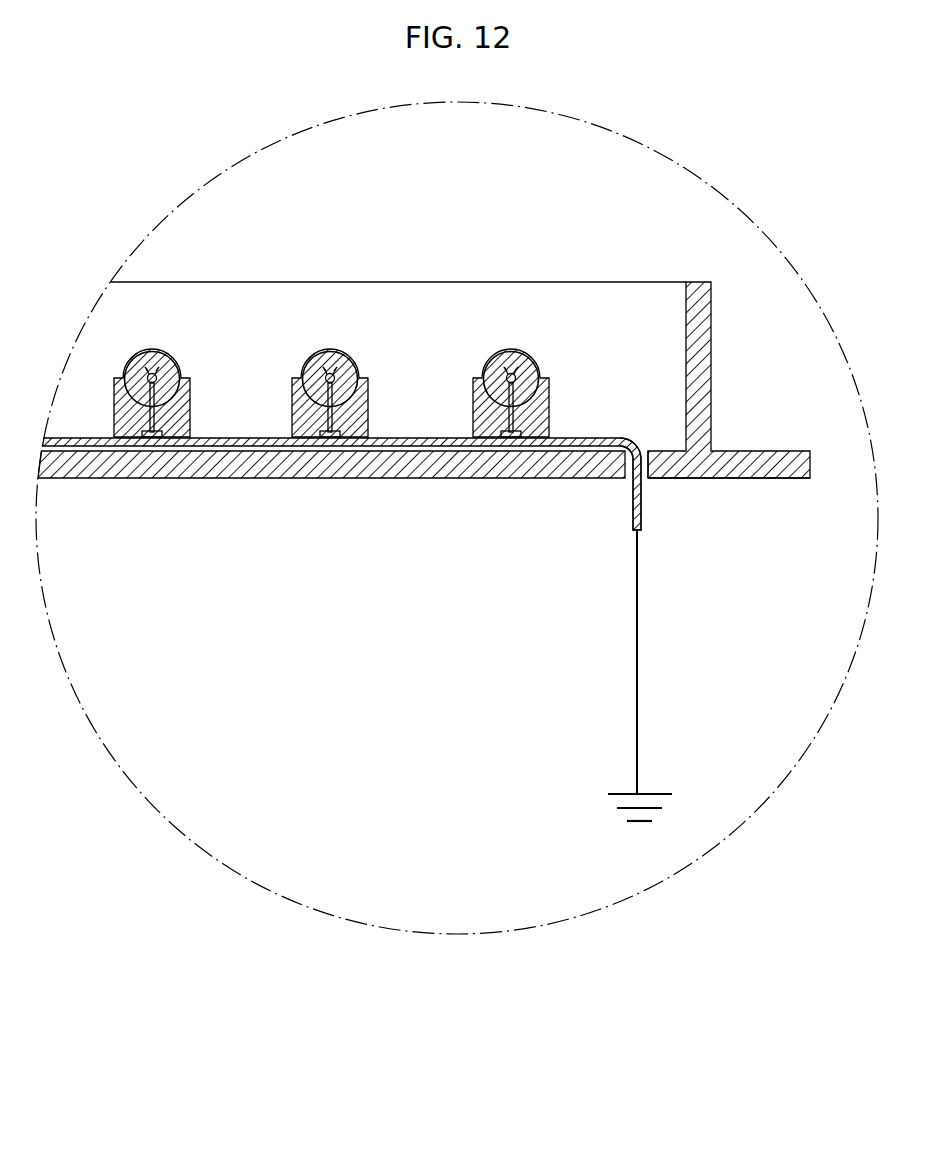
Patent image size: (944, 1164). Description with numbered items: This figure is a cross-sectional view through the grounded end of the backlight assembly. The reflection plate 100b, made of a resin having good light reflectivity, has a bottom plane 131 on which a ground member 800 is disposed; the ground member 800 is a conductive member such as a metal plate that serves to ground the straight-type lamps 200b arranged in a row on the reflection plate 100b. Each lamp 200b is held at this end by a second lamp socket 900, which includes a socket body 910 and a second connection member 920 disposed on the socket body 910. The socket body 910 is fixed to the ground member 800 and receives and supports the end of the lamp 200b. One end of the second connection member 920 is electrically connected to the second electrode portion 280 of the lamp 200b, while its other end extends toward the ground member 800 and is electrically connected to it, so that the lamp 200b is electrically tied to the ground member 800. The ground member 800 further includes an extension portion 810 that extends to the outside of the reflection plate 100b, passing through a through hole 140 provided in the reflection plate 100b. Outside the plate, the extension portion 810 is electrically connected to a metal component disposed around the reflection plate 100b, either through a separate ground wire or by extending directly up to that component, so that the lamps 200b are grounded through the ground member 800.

The reflection plate 100b is at (714, 292).
The bottom plane 131 is at (666, 450).
The ground member 800 is at (241, 437).
The through hole 140 is at (630, 478).
The extension portion 810 is at (633, 518).
The second lamp socket 900 is at (499, 333).
The socket body 910 is at (550, 397).
The second connection member 920 is at (514, 428).
The straight-type lamp 200b is at (528, 362).
The second electrode portion 280 is at (511, 374).